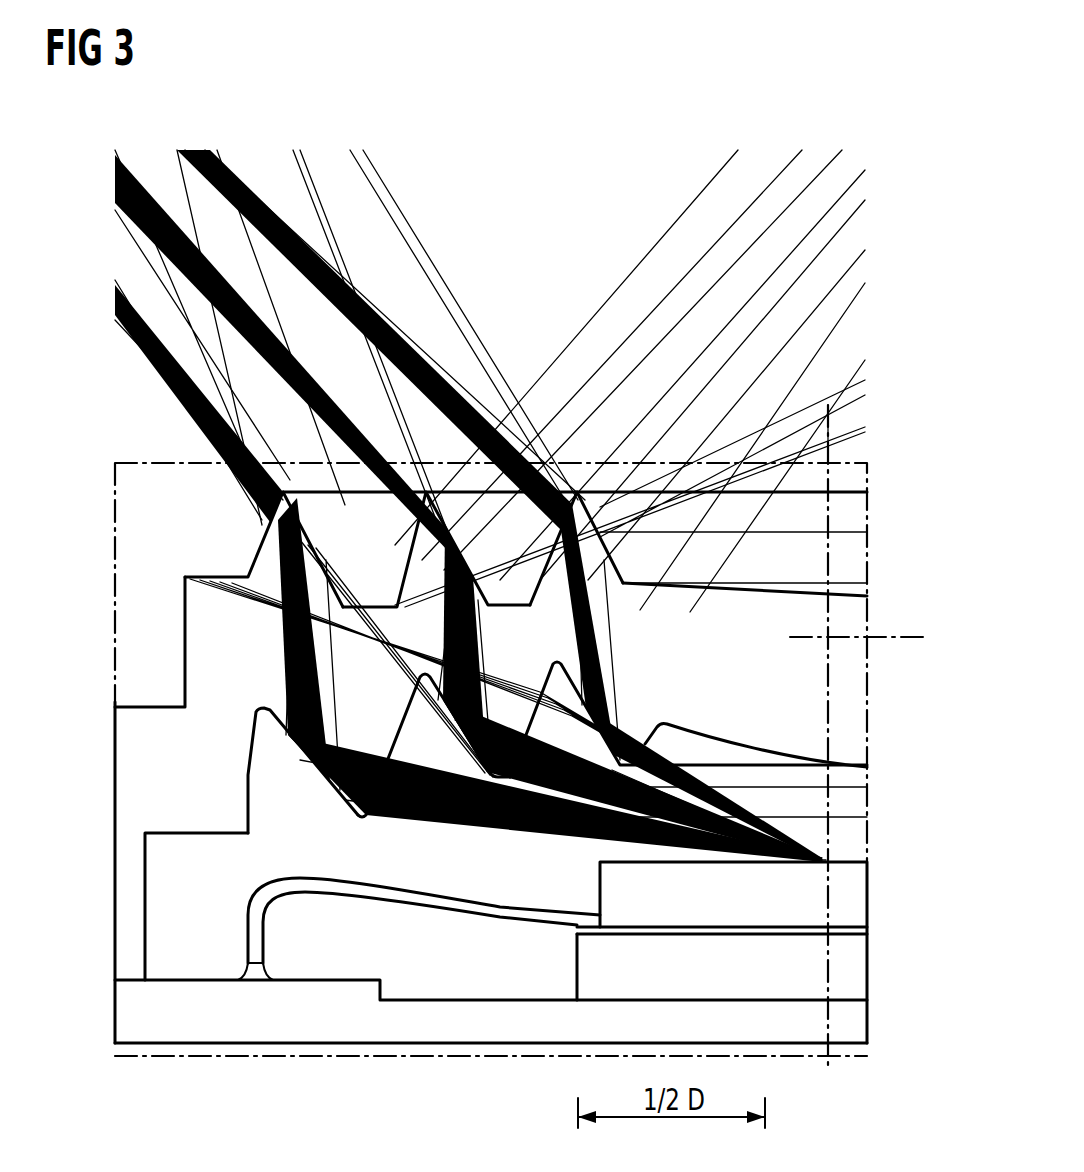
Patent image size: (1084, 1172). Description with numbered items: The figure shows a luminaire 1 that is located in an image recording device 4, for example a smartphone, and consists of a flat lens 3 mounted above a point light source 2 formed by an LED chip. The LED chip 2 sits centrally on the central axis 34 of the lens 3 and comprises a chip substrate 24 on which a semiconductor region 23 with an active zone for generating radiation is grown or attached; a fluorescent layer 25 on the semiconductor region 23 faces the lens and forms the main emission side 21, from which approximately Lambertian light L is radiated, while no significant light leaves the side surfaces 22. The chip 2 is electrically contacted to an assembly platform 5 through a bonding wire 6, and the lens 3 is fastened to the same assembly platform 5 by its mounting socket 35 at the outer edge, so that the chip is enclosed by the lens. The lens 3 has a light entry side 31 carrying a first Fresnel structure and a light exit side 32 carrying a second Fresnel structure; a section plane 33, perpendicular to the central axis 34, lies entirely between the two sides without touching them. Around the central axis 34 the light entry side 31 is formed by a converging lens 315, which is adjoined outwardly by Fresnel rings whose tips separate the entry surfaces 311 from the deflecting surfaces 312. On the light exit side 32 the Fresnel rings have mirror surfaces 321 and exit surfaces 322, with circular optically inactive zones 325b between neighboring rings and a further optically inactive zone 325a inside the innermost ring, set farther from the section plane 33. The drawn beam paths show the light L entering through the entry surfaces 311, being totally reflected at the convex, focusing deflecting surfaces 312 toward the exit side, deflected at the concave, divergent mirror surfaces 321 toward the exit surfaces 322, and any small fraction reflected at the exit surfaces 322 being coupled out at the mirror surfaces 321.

The luminaire 1 is at (538, 552).
The image recording device 4 is at (538, 737).
The light L is at (442, 282).
The point light source 2 is at (774, 918).
The main emission side 21 is at (862, 855).
The side surfaces 22 is at (570, 954).
The semiconductor region 23 is at (856, 931).
The chip substrate 24 is at (856, 966).
The fluorescent layer 25 is at (856, 893).
The lens 3 is at (185, 626).
The light entry side 31 is at (584, 772).
The entry surfaces 311 is at (378, 805).
The deflecting surfaces 312 is at (315, 780).
The converging lens 315 is at (778, 757).
The light exit side 32 is at (552, 594).
The mirror surfaces 321 is at (618, 554).
The exit surfaces 322 is at (266, 522).
The further optically inactive zone 325a is at (792, 592).
The optically inactive zones 325b is at (376, 610).
The section plane 33 is at (910, 637).
The central axis 34 is at (832, 420).
The mounting socket 35 is at (112, 878).
The assembly platform 5 is at (856, 1021).
The bonding wire 6 is at (441, 902).